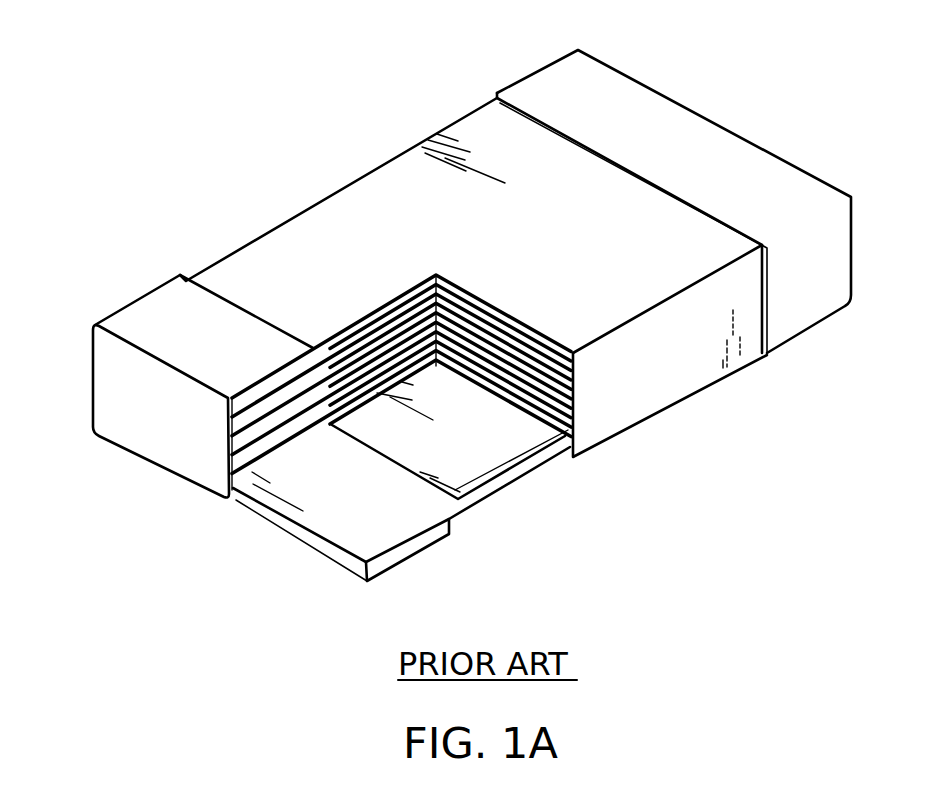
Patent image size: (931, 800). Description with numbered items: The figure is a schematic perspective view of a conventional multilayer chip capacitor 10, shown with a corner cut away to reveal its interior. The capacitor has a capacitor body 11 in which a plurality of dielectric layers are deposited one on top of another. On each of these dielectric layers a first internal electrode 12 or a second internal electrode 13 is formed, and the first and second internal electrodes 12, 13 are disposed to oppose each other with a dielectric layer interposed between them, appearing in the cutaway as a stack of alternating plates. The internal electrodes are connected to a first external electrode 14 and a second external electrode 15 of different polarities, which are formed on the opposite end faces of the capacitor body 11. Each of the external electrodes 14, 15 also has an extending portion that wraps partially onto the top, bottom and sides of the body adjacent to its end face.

The multilayer chip capacitor 10 is at (192, 108).
The capacitor body 11 is at (382, 188).
The first internal electrode 12 is at (252, 482).
The second internal electrode 13 is at (468, 443).
The first external electrode 14 is at (133, 428).
The second external electrode 15 is at (648, 117).